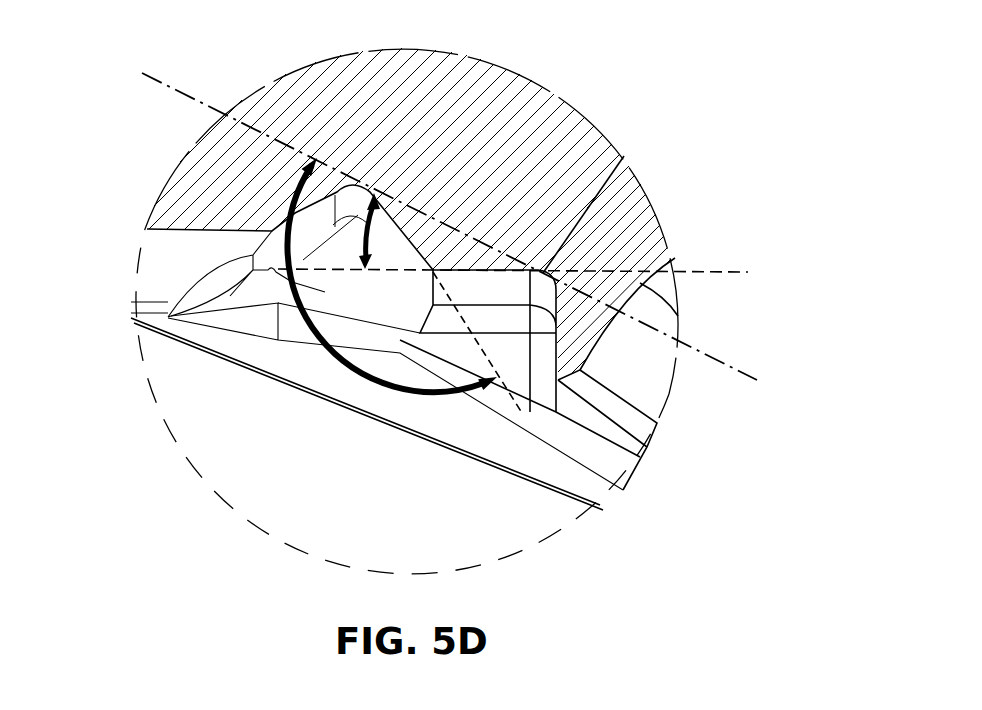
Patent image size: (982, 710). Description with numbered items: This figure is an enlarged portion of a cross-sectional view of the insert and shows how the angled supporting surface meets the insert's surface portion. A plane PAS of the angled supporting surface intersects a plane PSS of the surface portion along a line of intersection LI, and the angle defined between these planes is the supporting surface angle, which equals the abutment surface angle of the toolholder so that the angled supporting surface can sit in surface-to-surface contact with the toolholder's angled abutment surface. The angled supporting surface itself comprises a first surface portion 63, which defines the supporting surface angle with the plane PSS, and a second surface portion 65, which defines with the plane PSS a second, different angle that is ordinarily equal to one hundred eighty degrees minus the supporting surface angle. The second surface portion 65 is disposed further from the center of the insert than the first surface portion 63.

The second surface portion 65 is at (428, 242).
The first surface portion 63 is at (492, 277).
The line of intersection LI is at (624, 156).
The plane of the angled supporting surface PAS is at (723, 273).
The plane of the surface portion PSS is at (710, 357).